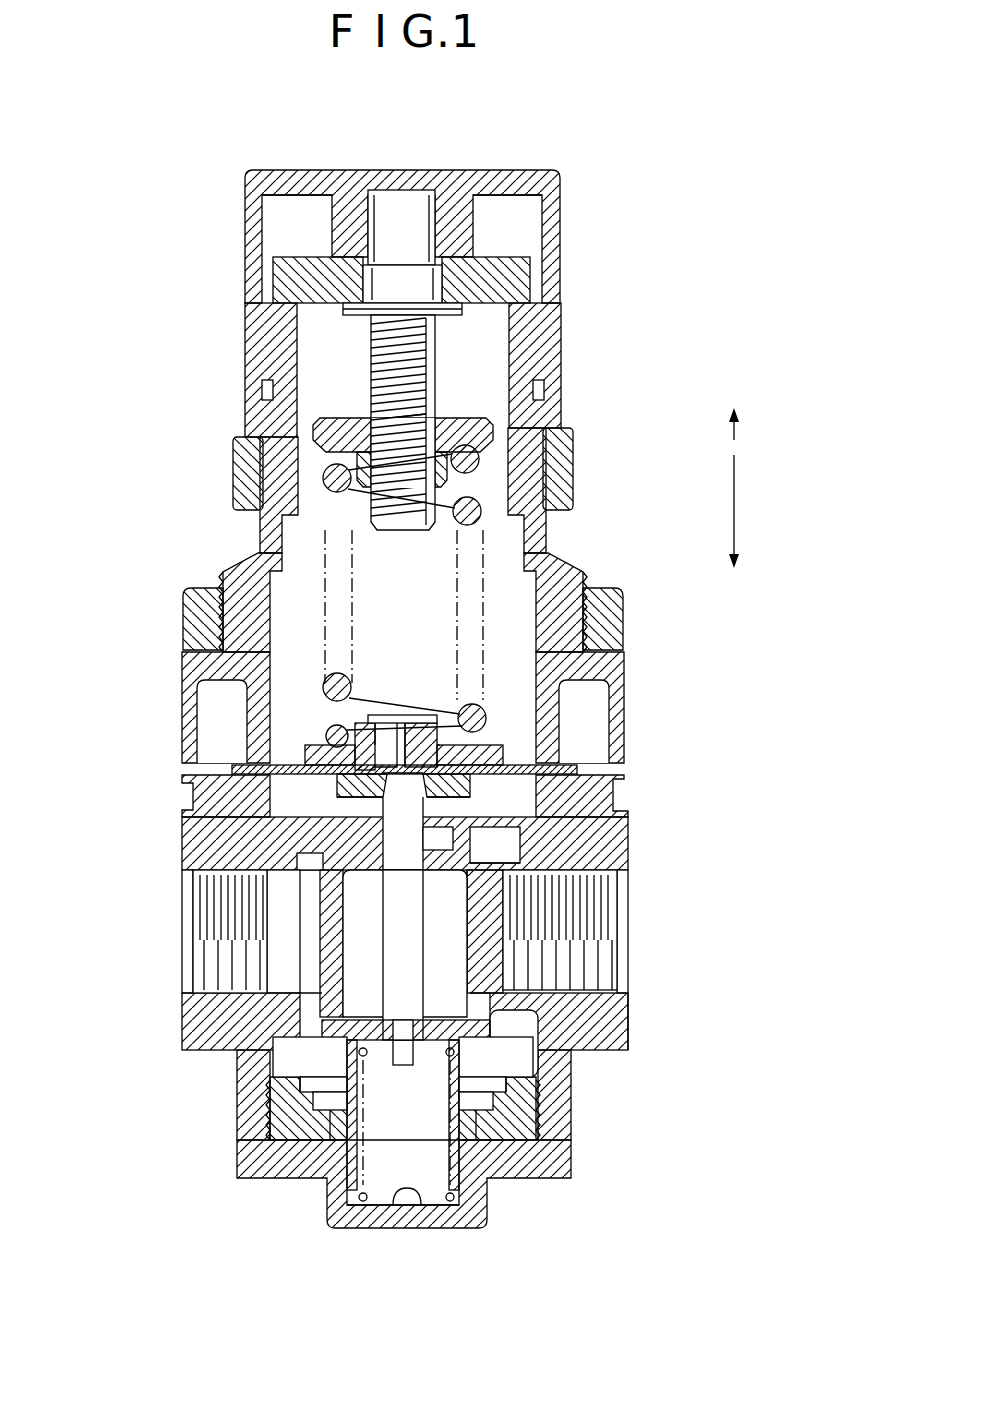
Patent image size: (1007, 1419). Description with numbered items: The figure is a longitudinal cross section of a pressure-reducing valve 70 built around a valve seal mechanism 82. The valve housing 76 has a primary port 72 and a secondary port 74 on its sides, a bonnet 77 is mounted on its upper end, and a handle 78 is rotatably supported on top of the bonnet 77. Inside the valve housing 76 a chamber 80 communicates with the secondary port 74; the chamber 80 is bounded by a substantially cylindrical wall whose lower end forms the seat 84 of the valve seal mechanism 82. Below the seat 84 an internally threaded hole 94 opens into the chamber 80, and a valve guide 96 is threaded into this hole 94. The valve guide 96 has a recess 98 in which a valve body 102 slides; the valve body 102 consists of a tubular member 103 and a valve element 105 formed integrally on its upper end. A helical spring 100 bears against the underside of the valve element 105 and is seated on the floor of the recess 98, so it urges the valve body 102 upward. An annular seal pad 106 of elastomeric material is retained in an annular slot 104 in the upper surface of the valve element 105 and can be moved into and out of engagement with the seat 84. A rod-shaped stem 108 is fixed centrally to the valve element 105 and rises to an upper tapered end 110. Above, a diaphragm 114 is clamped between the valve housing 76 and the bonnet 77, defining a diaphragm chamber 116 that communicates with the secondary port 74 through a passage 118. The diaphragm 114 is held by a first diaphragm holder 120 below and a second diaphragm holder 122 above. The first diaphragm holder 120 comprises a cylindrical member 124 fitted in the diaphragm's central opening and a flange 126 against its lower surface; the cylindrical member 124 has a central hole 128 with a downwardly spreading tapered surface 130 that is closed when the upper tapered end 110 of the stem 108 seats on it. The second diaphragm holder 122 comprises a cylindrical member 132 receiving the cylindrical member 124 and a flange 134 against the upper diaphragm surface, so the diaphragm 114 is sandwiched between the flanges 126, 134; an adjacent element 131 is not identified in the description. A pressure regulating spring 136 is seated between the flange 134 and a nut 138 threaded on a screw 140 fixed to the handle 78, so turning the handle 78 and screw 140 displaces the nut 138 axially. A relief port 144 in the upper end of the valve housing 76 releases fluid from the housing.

The pressure-reducing valve 70 is at (616, 165).
The primary port 72 is at (220, 985).
The secondary port 74 is at (630, 997).
The valve housing 76 is at (640, 830).
The bonnet 77 is at (568, 546).
The handle 78 is at (554, 156).
The chamber 80 is at (410, 912).
The valve seal mechanism 82 is at (495, 985).
The seat 84 is at (335, 1010).
The hole 94 is at (490, 1070).
The valve guide 96 is at (514, 1195).
The recess 98 is at (415, 1205).
The helical spring 100 is at (365, 1205).
The valve body 102 is at (332, 1140).
The tubular member 103 is at (520, 1130).
The annular slot 104 is at (355, 1045).
The valve element 105 is at (495, 1100).
The seal pad 106 is at (345, 1062).
The stem 108 is at (500, 965).
The upper tapered end 110 is at (540, 876).
The diaphragm 114 is at (540, 755).
The diaphragm chamber 116 is at (515, 790).
The passage 118 is at (510, 890).
The first diaphragm holder 120 is at (322, 802).
The second diaphragm holder 122 is at (335, 720).
The cylindrical member 124 is at (393, 740).
The flange 126 is at (290, 785).
The central hole 128 is at (403, 735).
The tapered surface 130 is at (413, 740).
The spring seat 131 is at (440, 712).
The cylindrical member 132 is at (318, 737).
The flange 134 is at (305, 752).
The pressure regulating spring 136 is at (478, 516).
The nut 138 is at (492, 424).
The screw 140 is at (436, 362).
The relief port 144 is at (320, 258).